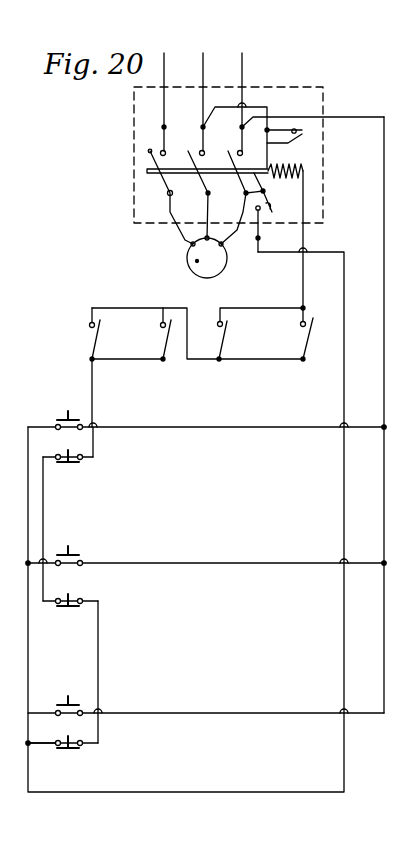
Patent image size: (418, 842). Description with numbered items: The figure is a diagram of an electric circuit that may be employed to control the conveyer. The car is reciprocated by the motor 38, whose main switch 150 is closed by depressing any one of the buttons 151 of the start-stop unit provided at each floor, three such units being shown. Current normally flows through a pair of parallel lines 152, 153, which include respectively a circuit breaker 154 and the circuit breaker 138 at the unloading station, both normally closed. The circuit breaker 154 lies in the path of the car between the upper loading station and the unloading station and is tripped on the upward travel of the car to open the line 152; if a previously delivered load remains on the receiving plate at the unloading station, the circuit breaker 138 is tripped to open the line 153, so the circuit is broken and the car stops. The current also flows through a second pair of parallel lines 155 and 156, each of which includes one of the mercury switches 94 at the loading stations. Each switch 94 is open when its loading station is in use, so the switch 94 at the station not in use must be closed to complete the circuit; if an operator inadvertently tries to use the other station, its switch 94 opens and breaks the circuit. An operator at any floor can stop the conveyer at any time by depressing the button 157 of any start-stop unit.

The main switch 150 is at (147, 171).
The motor 38 is at (197, 261).
The parallel line 155 is at (92, 312).
The parallel line 156 is at (163, 318).
The mercury switch 94 is at (88, 338).
The parallel line 152 is at (220, 320).
The circuit breaker 154 is at (243, 322).
The parallel line 153 is at (306, 320).
The circuit breaker 138 is at (300, 343).
The button 151 is at (62, 419).
The button 157 is at (76, 463).